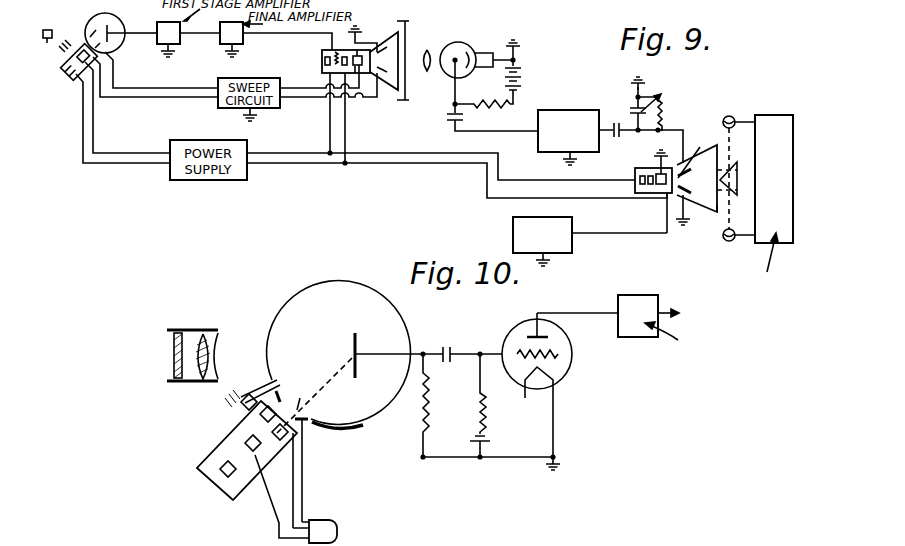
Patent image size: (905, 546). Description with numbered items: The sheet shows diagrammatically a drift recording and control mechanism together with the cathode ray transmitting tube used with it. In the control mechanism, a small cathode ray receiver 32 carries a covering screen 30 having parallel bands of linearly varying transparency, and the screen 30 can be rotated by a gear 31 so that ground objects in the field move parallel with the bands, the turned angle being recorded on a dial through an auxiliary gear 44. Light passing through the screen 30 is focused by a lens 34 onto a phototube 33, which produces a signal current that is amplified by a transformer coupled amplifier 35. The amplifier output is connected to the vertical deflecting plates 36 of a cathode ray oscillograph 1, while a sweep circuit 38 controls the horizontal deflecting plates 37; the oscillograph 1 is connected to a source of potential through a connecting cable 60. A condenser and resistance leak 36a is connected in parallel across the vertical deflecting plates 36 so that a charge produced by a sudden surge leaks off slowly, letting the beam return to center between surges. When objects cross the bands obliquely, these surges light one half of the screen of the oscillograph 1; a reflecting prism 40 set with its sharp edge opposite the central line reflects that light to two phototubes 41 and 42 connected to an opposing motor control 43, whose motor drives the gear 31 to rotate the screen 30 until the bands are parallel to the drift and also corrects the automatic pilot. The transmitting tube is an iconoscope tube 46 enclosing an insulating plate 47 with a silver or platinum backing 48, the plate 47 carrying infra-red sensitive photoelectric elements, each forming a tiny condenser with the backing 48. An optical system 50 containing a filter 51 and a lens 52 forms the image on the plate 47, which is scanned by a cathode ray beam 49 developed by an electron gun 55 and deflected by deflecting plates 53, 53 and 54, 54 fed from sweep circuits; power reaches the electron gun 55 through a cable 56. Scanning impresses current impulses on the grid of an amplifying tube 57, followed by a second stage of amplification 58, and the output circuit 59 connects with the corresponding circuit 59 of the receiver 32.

In FIG. 9, the cathode ray oscillograph 1 is at (710, 213).
In FIG. 9, the covering screen 30 is at (407, 47).
In FIG. 9, the gear 31 is at (408, 27).
In FIG. 9, the cathode ray receiver 32 is at (370, 40).
In FIG. 9, the phototube 33 is at (461, 42).
In FIG. 9, the lens 34 is at (430, 72).
In FIG. 9, the transformer coupled amplifier 35 is at (564, 108).
In FIG. 9, the vertical deflecting plates 36 is at (684, 164).
In FIG. 9, the condenser and resistance leak 36a is at (662, 95).
In FIG. 9, the horizontal deflecting plates 37 is at (660, 193).
In FIG. 9, the sweep circuit 38 is at (513, 228).
In FIG. 9, the reflecting prism 40 is at (737, 190).
In FIG. 9, the phototube 41 is at (729, 116).
In FIG. 9, the phototube 42 is at (729, 241).
In FIG. 9, the motor control 43 is at (766, 209).
In FIG. 9, the auxiliary gear 44 is at (400, 111).
In FIG. 9, the iconoscope tube 46 is at (87, 22).
In FIG. 10, the iconoscope tube 46 is at (292, 307).
In FIG. 10, the plate 47 is at (353, 341).
In FIG. 10, the backing 48 is at (358, 345).
In FIG. 10, the cathode ray beam 49 is at (338, 367).
In FIG. 9, the optical system 50 is at (65, 55).
In FIG. 10, the optical system 50 is at (194, 341).
In FIG. 10, the filter 51 is at (172, 357).
In FIG. 10, the lens 52 is at (216, 359).
In FIG. 10, the deflecting plates 53 is at (259, 394).
In FIG. 10, the deflecting plates 54 is at (300, 398).
In FIG. 10, the electron gun 55 is at (224, 460).
In FIG. 9, the cable 56 is at (140, 150).
In FIG. 10, the cable 56 is at (328, 520).
In FIG. 9, the amplifying tube 57 is at (170, 39).
In FIG. 10, the amplifying tube 57 is at (573, 356).
In FIG. 9, the second stage of amplification 58 is at (233, 39).
In FIG. 10, the second stage of amplification 58 is at (642, 338).
In FIG. 9, the circuit 59 is at (139, 32).
In FIG. 10, the circuit 59 is at (680, 314).
In FIG. 9, the connecting cable 60 is at (615, 176).